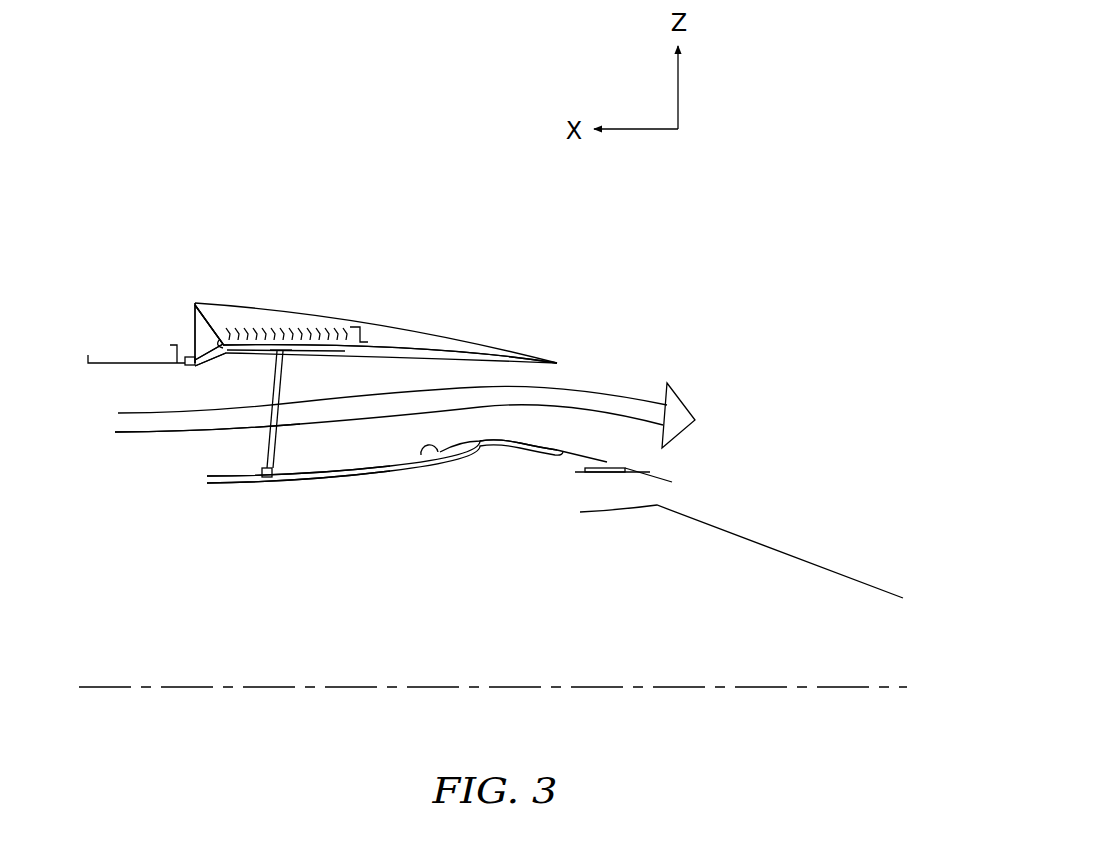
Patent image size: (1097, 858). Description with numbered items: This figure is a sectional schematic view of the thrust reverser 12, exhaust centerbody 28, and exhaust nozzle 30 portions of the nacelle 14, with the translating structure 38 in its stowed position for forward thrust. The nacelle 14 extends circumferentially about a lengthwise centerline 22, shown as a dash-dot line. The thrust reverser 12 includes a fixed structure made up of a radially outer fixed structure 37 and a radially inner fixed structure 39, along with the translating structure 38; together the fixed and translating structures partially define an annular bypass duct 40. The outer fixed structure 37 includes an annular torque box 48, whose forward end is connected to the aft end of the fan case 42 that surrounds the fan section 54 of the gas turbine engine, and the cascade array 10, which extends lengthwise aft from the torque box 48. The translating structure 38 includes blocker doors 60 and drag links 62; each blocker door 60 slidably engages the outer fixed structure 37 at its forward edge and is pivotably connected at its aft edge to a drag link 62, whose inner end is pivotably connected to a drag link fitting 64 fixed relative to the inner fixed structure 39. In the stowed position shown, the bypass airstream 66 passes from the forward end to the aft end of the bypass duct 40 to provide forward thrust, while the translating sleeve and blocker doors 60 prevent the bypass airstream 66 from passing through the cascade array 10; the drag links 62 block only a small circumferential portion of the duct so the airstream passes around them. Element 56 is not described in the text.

The cascade array 10 is at (292, 322).
The thrust reverser 12 is at (331, 245).
The nacelle 14 is at (331, 218).
The centerline 22 is at (664, 687).
The exhaust centerbody 28 is at (753, 540).
The exhaust nozzle 30 is at (653, 475).
The radially outer fixed structure 37 is at (183, 290).
The translating structure 38 is at (393, 294).
The radially inner fixed structure 39 is at (260, 495).
The annular bypass duct 40 is at (384, 449).
The fan case 42 is at (117, 362).
The annular torque box 48 is at (177, 325).
The fan section 54 is at (400, 478).
The fastener / pivot 56 is at (433, 458).
The blocker door 60 is at (230, 364).
The drag link 62 is at (280, 447).
The drag link fitting 64 is at (262, 470).
The bypass airstream 66 is at (158, 435).